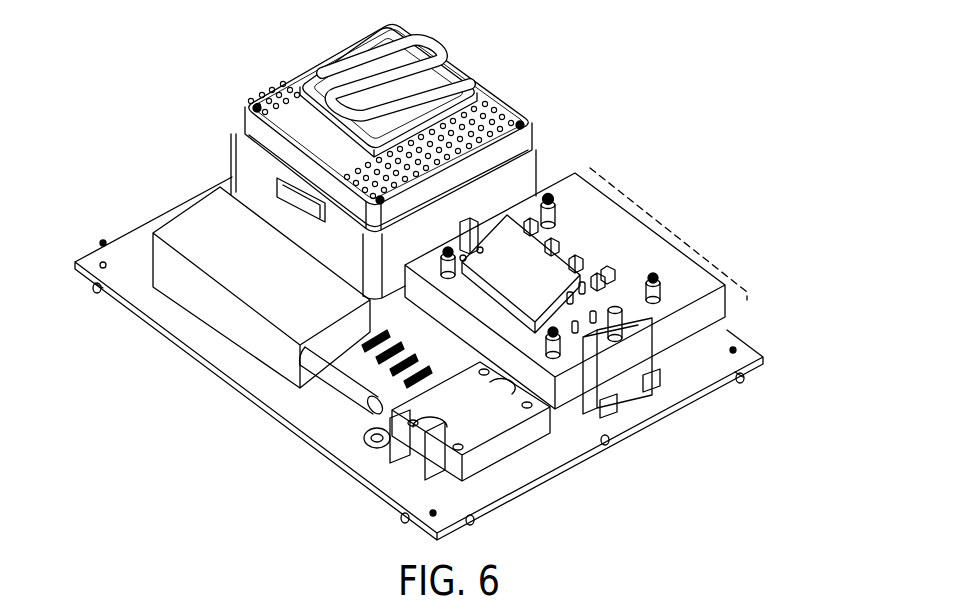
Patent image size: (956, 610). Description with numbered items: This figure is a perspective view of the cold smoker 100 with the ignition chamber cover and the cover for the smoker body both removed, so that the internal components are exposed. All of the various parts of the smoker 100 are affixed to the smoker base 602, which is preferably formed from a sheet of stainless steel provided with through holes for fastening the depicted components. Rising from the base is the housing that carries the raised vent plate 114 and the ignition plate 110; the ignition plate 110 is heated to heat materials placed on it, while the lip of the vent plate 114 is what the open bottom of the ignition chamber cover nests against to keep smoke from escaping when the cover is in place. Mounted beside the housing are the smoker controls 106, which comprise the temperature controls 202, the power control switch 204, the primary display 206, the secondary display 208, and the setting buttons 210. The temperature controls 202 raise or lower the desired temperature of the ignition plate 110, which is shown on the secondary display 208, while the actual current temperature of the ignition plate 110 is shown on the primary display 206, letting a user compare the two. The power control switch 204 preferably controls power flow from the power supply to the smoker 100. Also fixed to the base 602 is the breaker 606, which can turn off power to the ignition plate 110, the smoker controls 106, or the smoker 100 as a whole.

The smoker 100 is at (737, 202).
The smoker controls 106 is at (576, 288).
The ignition plate 110 is at (308, 80).
The raised vent plate 114 is at (310, 143).
The temperature controls 202 is at (576, 258).
The power control switch 204 is at (617, 333).
The primary display 206 is at (485, 268).
The secondary display 208 is at (542, 200).
The setting buttons 210 is at (609, 270).
The smoker base 602 is at (140, 303).
The breaker 606 is at (372, 455).